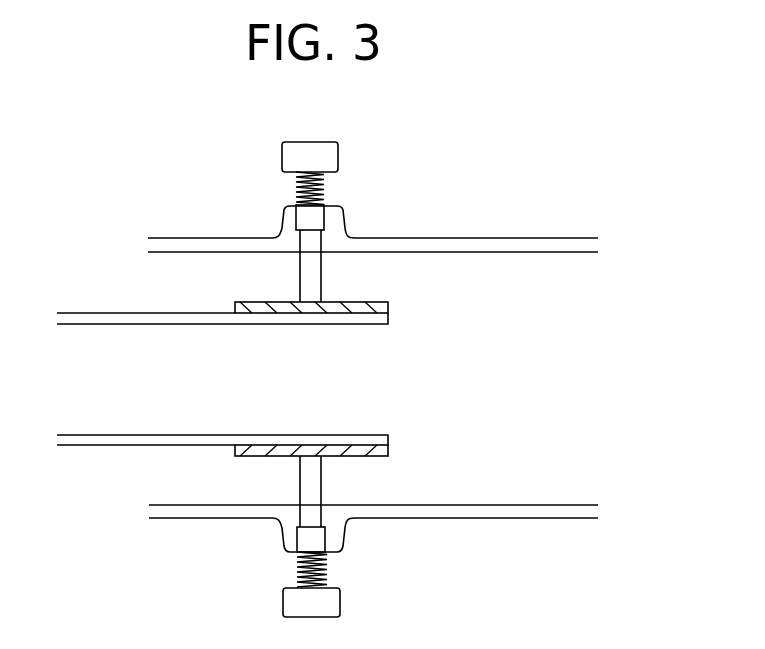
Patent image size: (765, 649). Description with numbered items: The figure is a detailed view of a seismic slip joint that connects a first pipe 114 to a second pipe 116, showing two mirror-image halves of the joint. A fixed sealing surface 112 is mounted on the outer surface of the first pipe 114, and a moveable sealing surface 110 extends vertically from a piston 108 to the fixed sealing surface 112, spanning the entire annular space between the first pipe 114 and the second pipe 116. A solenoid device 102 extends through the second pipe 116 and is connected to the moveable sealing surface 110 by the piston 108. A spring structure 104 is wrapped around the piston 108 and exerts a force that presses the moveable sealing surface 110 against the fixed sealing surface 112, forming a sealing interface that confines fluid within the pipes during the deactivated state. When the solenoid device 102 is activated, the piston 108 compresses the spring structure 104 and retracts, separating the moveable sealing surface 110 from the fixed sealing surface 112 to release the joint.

The solenoid device 102 is at (326, 139).
The spring structure 104 is at (327, 187).
The piston 108 is at (302, 218).
The moveable sealing surface 110 is at (300, 273).
The fixed sealing surface 112 is at (382, 308).
The first pipe 114 is at (307, 327).
The second pipe 116 is at (517, 238).